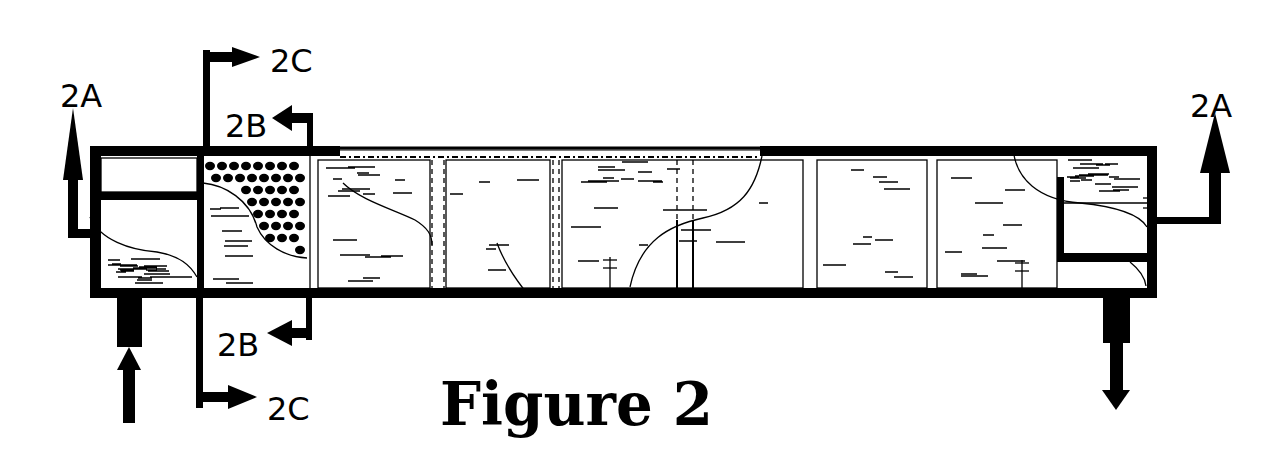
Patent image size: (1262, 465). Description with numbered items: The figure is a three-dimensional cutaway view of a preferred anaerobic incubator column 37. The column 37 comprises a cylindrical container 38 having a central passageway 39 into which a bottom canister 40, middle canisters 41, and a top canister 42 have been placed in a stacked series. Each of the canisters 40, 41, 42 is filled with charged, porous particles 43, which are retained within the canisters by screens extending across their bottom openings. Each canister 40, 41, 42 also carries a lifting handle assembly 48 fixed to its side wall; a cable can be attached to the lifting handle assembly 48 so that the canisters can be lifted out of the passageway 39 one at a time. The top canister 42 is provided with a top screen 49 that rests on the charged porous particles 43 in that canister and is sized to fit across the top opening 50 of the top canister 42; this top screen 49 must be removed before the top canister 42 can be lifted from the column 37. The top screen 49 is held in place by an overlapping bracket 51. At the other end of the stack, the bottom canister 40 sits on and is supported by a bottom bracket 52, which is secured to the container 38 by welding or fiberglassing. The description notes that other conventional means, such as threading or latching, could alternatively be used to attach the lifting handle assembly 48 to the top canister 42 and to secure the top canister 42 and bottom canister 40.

The anaerobic incubator column 37 is at (508, 148).
The cylindrical container 38 is at (628, 148).
The central passageway 39 is at (808, 202).
The bottom canister 40 is at (183, 293).
The middle canisters 41 is at (873, 260).
The top canister 42 is at (1020, 297).
The charged porous particles 43 is at (300, 197).
The lifting handle assembly 48 is at (310, 220).
The top screen 49 is at (1052, 174).
The top opening 50 is at (1057, 230).
The overlapping bracket 51 is at (1130, 262).
The bottom bracket 52 is at (165, 190).